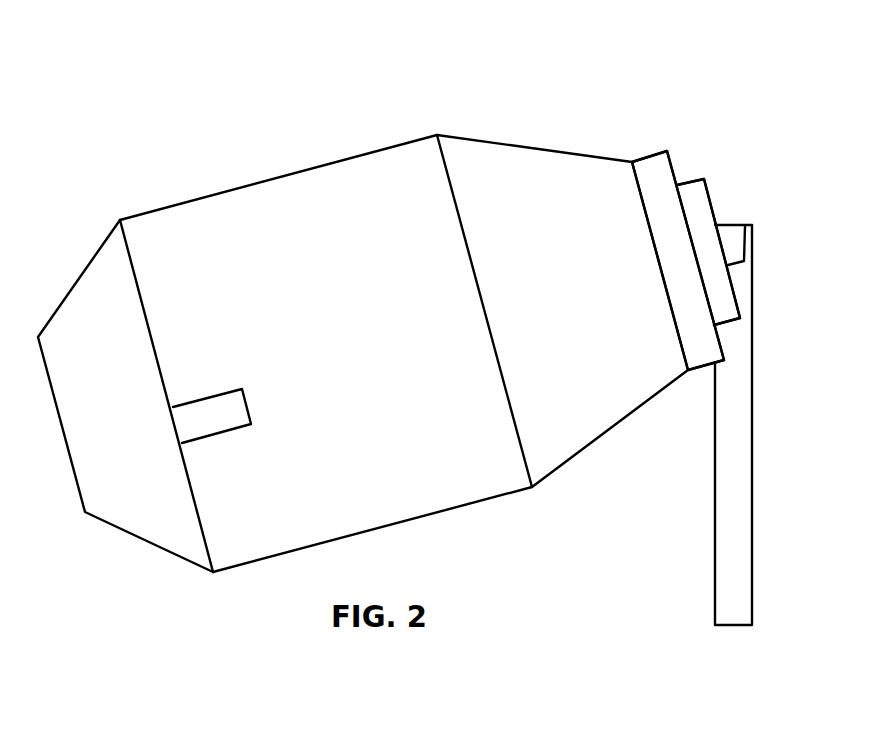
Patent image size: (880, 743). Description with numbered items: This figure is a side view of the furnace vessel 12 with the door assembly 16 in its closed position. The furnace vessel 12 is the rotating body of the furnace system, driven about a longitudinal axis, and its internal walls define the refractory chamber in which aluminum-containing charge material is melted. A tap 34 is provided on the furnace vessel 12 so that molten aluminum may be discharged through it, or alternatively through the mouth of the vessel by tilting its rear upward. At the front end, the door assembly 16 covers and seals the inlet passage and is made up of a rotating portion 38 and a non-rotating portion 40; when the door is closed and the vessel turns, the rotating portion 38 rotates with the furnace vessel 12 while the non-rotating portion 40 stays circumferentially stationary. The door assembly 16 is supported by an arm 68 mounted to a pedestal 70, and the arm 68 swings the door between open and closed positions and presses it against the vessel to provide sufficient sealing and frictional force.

The furnace vessel 12 is at (152, 226).
The door assembly 16 is at (677, 116).
The tap 34 is at (187, 423).
The rotating portion 38 is at (659, 163).
The non-rotating portion 40 is at (698, 200).
The arm 68 is at (733, 243).
The pedestal 70 is at (733, 525).